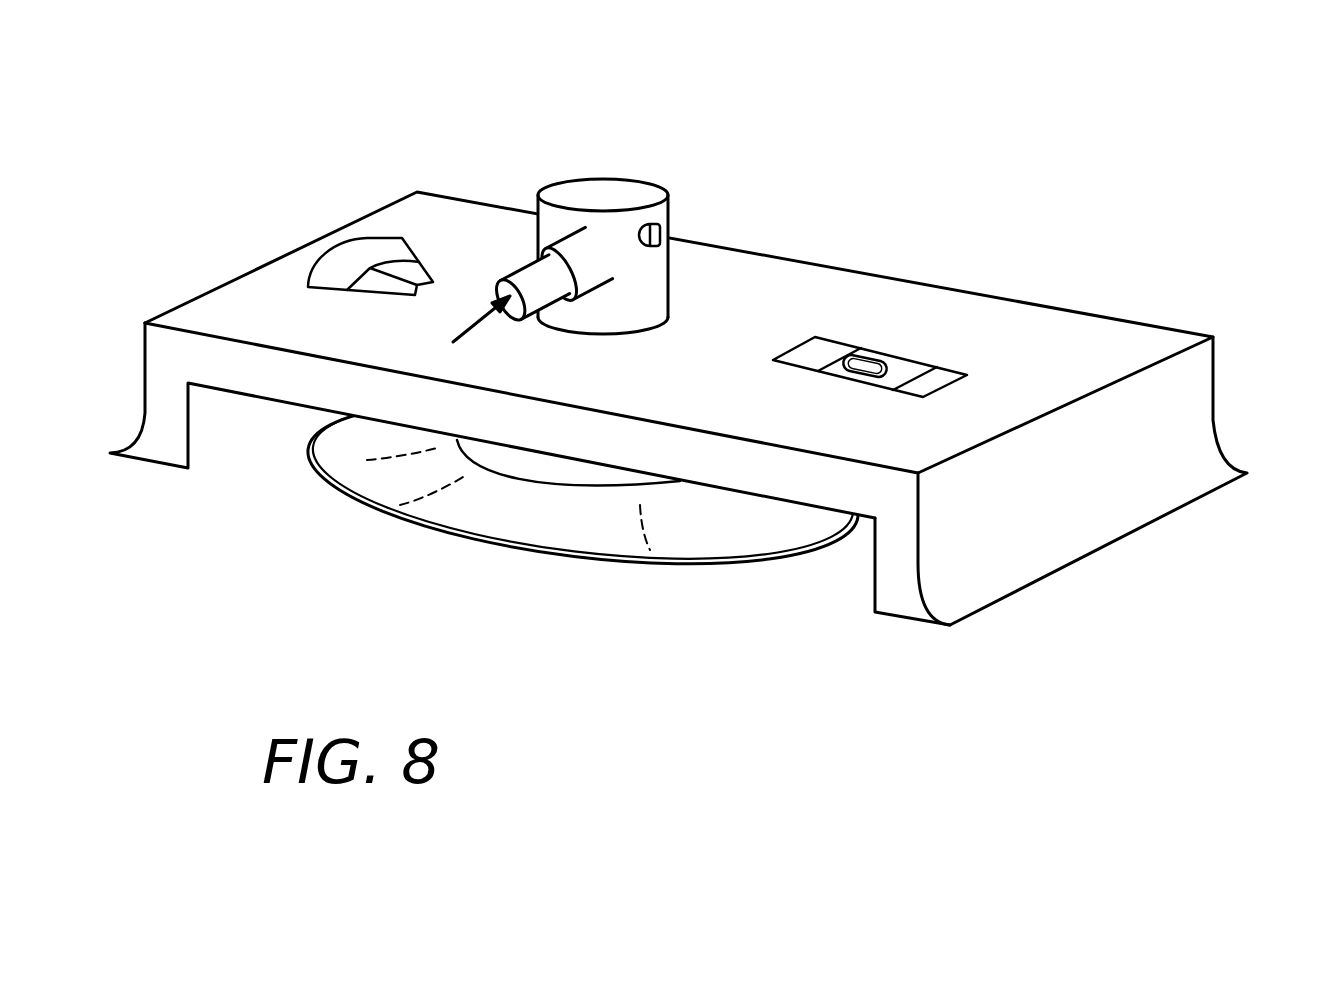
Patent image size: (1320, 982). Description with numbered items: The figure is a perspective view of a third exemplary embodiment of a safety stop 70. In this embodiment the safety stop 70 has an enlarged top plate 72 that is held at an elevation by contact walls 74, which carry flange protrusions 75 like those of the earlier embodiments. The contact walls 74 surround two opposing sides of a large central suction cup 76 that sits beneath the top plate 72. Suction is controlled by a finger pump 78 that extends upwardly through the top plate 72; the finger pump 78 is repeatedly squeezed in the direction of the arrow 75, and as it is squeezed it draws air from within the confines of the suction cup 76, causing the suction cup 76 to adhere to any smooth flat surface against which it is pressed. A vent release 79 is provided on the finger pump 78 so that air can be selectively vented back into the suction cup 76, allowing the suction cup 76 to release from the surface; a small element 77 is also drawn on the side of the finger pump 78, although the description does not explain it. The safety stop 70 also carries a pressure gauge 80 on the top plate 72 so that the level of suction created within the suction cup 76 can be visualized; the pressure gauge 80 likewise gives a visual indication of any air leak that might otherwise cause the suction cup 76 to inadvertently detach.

The safety stop 70 is at (712, 125).
The top plate 72 is at (925, 303).
The contact walls 74 is at (1200, 448).
The flange protrusions 75 is at (922, 612).
The suction cup 76 is at (682, 540).
The button 77 is at (663, 233).
The finger pump 78 is at (608, 197).
The vent release 79 is at (455, 338).
The pressure gauge 80 is at (383, 250).